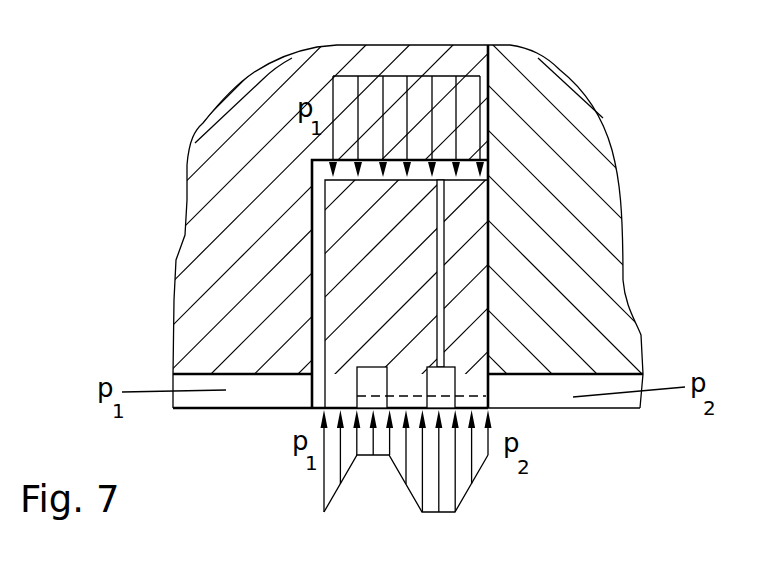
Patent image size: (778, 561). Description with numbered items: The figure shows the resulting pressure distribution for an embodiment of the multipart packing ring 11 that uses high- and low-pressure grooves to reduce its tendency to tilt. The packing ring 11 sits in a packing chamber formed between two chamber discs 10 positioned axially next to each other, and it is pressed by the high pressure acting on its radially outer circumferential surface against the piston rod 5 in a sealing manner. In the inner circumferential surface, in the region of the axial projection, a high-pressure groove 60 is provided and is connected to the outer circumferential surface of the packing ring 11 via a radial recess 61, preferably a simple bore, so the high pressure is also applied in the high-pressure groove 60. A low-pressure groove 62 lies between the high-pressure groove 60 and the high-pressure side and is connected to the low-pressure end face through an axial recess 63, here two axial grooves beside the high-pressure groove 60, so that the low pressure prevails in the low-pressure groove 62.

The piston rod 5 is at (585, 534).
The chamber disc 10 is at (256, 145).
The packing ring 11 is at (358, 302).
The high-pressure groove 60 is at (443, 372).
The radial recess 61 is at (442, 230).
The low-pressure groove 62 is at (377, 378).
The axial recess 63 is at (473, 403).